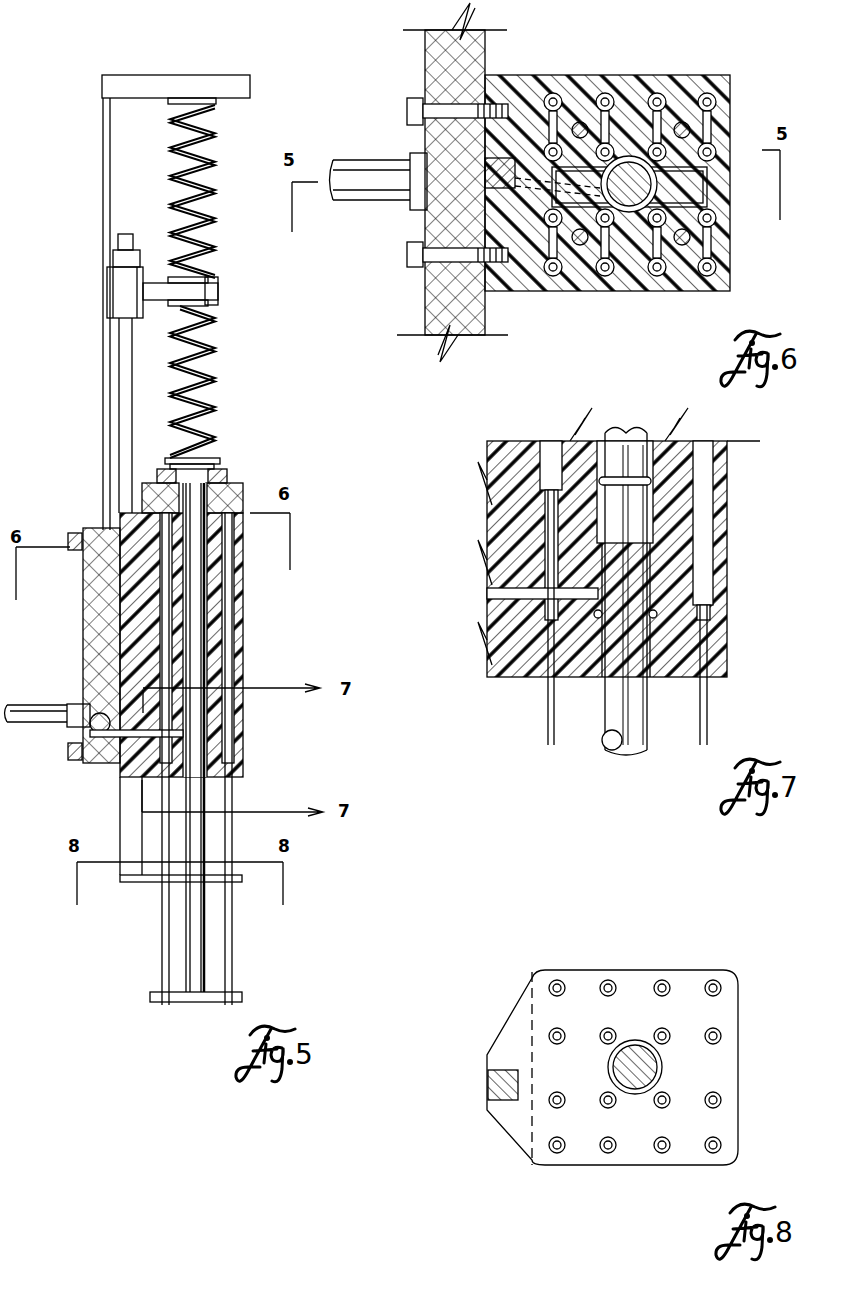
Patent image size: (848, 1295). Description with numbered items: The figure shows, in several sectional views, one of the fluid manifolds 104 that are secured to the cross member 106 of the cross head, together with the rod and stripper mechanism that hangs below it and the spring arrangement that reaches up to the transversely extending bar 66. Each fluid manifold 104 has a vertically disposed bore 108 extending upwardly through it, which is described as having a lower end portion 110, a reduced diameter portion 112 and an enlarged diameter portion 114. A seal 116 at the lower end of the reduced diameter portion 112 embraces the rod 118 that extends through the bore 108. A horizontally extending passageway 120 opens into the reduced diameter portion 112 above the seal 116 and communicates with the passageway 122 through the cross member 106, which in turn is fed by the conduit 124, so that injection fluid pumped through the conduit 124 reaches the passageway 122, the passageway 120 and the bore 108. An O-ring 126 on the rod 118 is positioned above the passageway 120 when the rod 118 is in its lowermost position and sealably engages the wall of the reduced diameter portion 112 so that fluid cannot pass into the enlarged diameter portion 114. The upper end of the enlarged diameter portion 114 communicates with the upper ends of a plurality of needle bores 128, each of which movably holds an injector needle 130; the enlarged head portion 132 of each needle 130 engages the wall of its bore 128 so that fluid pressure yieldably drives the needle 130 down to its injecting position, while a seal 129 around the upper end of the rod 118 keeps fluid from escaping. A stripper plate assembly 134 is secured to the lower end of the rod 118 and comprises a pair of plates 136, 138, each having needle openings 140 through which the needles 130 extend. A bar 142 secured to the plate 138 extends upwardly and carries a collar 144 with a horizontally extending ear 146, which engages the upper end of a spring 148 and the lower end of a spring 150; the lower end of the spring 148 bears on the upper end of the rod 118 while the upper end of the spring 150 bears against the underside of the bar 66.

In FIG. 5, the bar 66 is at (250, 95).
In FIG. 5, the fluid manifold 104 is at (232, 656).
In FIG. 6, the fluid manifold 104 is at (607, 183).
In FIG. 7, the fluid manifold 104 is at (619, 542).
In FIG. 5, the cross member 106 is at (83, 652).
In FIG. 5, the bore 108 is at (210, 651).
In FIG. 7, the bore 108 is at (655, 441).
In FIG. 7, the lower end portion 110 is at (605, 748).
In FIG. 7, the reduced diameter portion 112 is at (650, 590).
In FIG. 6, the enlarged diameter portion 114 is at (660, 178).
In FIG. 7, the enlarged diameter portion 114 is at (640, 500).
In FIG. 7, the seal 116 is at (680, 600).
In FIG. 5, the rod 118 is at (185, 915).
In FIG. 6, the rod 118 is at (620, 205).
In FIG. 7, the rod 118 is at (618, 760).
In FIG. 8, the rod 118 is at (662, 1065).
In FIG. 5, the passageway 120 is at (100, 735).
In FIG. 6, the passageway 120 is at (480, 218).
In FIG. 7, the passageway 120 is at (490, 592).
In FIG. 5, the passageway 122 is at (82, 760).
In FIG. 6, the passageway 122 is at (430, 292).
In FIG. 5, the conduit 124 is at (40, 705).
In FIG. 6, the conduit 124 is at (355, 160).
In FIG. 7, the O-ring 126 is at (650, 481).
In FIG. 5, the needle bore 128 is at (166, 680).
In FIG. 6, the needle bore 128 is at (650, 75).
In FIG. 7, the needle bore 128 is at (545, 441).
In FIG. 5, the seal 129 is at (227, 478).
In FIG. 5, the injector needle 130 is at (228, 945).
In FIG. 7, the injector needle 130 is at (548, 740).
In FIG. 8, the injector needle 130 is at (662, 982).
In FIG. 6, the enlarged head portion 132 is at (716, 102).
In FIG. 7, the enlarged head portion 132 is at (530, 497).
In FIG. 5, the stripper plate assembly 134 is at (153, 988).
In FIG. 5, the plate 136 is at (150, 1002).
In FIG. 8, the plate 136 is at (532, 1062).
In FIG. 5, the plate 138 is at (150, 882).
In FIG. 8, the plate 138 is at (487, 1068).
In FIG. 8, the needle openings 140 is at (560, 985).
In FIG. 5, the bar 142 is at (120, 800).
In FIG. 6, the bar 142 is at (485, 170).
In FIG. 8, the bar 142 is at (488, 1088).
In FIG. 5, the collar 144 is at (107, 284).
In FIG. 5, the ear 146 is at (218, 285).
In FIG. 5, the spring 148 is at (221, 462).
In FIG. 5, the spring 150 is at (215, 243).